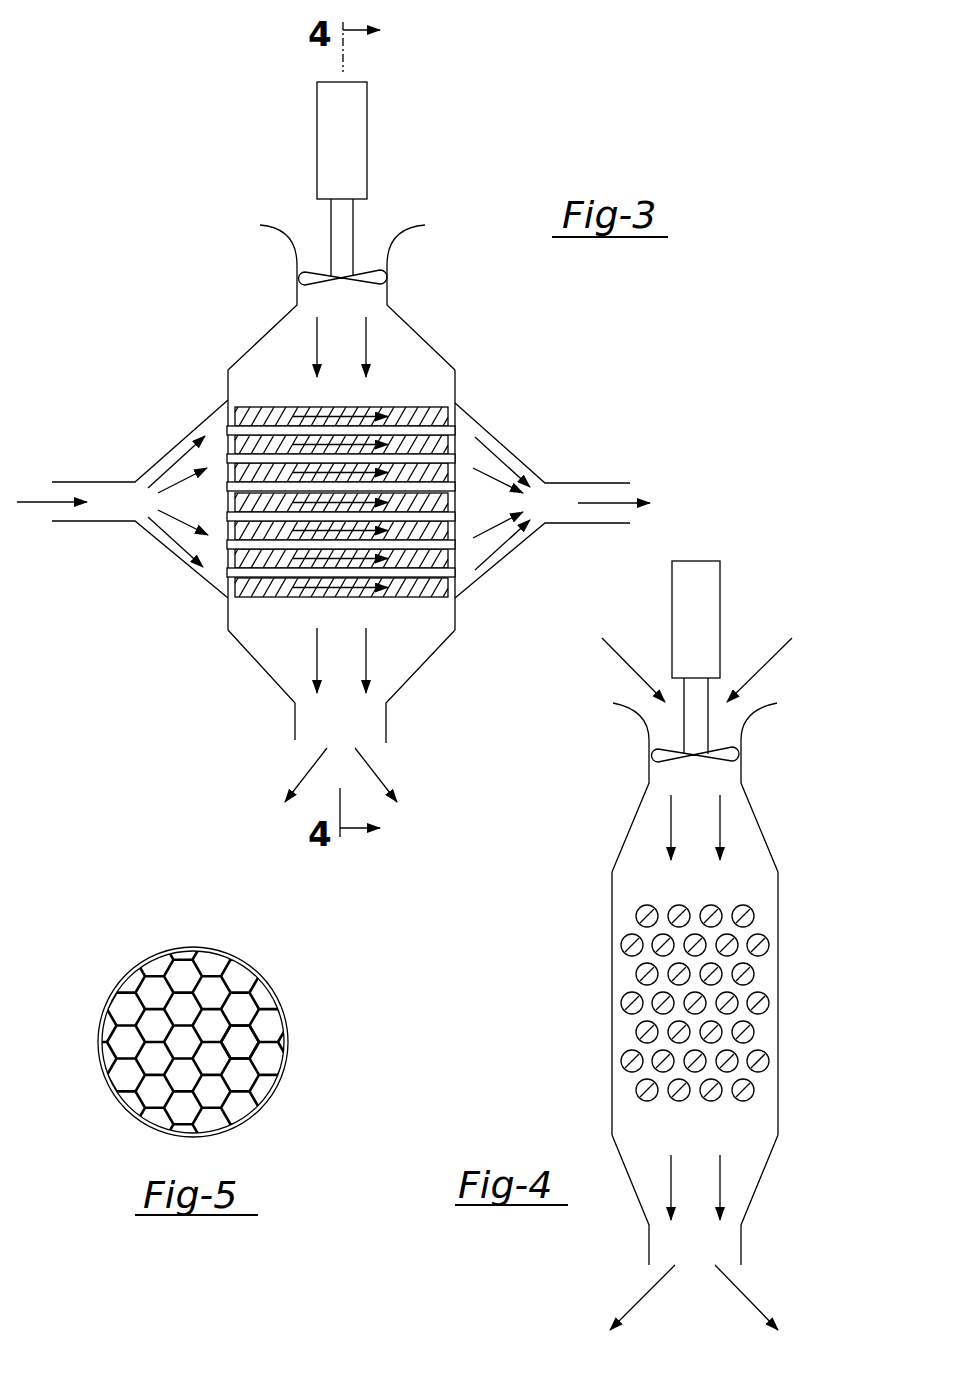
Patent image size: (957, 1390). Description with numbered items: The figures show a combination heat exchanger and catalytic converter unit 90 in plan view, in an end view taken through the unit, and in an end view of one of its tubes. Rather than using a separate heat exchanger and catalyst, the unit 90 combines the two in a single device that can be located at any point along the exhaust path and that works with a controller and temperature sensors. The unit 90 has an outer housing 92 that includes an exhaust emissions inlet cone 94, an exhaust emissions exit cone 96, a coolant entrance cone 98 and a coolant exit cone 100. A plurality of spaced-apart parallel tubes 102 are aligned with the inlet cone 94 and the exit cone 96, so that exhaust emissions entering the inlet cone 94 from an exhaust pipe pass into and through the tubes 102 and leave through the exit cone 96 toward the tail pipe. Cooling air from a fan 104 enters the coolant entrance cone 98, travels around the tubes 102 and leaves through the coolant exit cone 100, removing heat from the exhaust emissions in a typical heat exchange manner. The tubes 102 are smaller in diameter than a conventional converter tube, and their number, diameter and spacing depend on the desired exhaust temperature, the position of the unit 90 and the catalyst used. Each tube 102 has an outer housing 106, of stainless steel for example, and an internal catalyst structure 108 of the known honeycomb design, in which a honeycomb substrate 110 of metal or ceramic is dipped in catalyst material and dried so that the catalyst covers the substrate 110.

In FIG. 3, the combination heat exchanger and catalytic converter unit 90 is at (153, 317).
In FIG. 4, the combination heat exchanger and catalytic converter unit 90 is at (754, 506).
In FIG. 3, the outer housing 92 is at (338, 717).
In FIG. 4, the outer housing 92 is at (612, 1030).
In FIG. 3, the exhaust emissions inlet cone 94 is at (180, 438).
In FIG. 3, the exhaust emissions exit cone 96 is at (502, 442).
In FIG. 3, the coolant entrance cone 98 is at (402, 312).
In FIG. 4, the coolant entrance cone 98 is at (741, 742).
In FIG. 3, the coolant exit cone 100 is at (422, 668).
In FIG. 4, the coolant exit cone 100 is at (758, 1178).
In FIG. 3, the tubes 102 is at (448, 590).
In FIG. 4, the tubes 102 is at (746, 916).
In FIG. 5, the tubes 102 is at (124, 932).
In FIG. 3, the fan 104 is at (367, 139).
In FIG. 4, the fan 104 is at (672, 617).
In FIG. 5, the outer housing 106 is at (232, 960).
In FIG. 5, the internal catalyst structure 108 is at (256, 1054).
In FIG. 5, the honeycomb substrate 110 is at (223, 998).